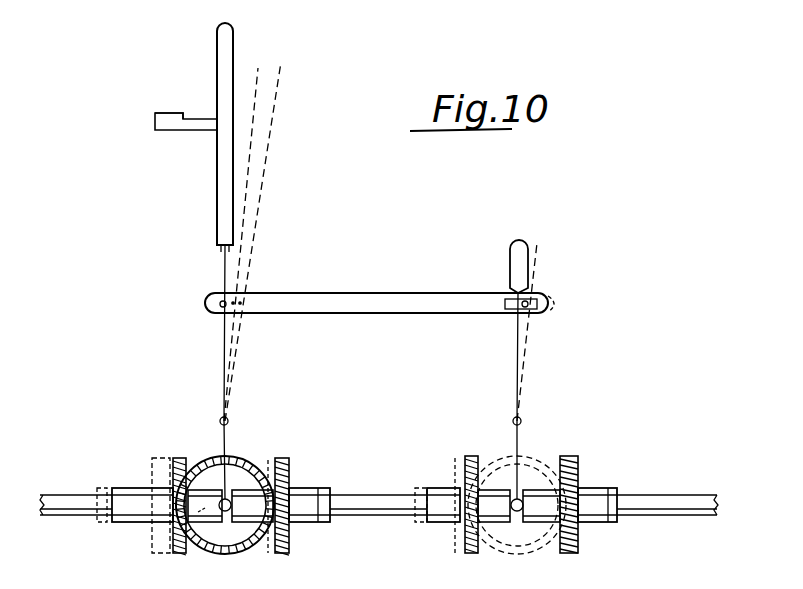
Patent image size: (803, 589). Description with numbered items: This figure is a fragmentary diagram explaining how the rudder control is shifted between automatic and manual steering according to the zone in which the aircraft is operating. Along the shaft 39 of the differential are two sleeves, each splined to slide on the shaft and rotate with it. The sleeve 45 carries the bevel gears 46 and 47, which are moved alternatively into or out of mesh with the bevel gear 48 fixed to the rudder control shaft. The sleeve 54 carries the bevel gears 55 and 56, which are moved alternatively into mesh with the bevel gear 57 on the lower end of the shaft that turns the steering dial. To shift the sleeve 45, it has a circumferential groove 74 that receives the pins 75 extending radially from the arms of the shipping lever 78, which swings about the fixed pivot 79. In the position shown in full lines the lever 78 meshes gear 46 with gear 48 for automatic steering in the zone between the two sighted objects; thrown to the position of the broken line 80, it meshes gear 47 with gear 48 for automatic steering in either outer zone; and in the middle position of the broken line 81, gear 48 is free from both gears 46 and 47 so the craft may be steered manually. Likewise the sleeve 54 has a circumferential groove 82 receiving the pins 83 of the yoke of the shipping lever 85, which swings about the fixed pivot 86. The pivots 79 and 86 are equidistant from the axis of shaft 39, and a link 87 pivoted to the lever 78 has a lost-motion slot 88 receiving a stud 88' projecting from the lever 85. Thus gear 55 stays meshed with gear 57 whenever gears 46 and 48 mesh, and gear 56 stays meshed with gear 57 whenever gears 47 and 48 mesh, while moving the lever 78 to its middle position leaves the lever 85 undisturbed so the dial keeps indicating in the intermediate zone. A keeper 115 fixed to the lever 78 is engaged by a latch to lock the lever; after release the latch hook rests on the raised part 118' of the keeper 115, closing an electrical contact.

The shaft 39 is at (62, 500).
The sleeve 45 is at (140, 522).
The bevel gear 46 is at (186, 465).
The bevel gear 47 is at (290, 470).
The bevel gear 48 is at (222, 552).
The sleeve 54 is at (452, 522).
The bevel gear 55 is at (465, 472).
The bevel gear 56 is at (580, 470).
The bevel gear 57 is at (545, 556).
The circumferential groove 74 is at (222, 522).
The pins 75 is at (230, 500).
The shipping lever 78 is at (217, 47).
The fixed pivot 79 is at (229, 421).
The broken line position 80 is at (261, 201).
The middle position 81 is at (252, 131).
The circumferential groove 82 is at (506, 528).
The pins 83 is at (522, 500).
The shipping lever 85 is at (530, 262).
The fixed pivot 86 is at (522, 421).
The link 87 is at (330, 300).
The lost-motion slot 88 is at (492, 318).
The stud 88' is at (579, 304).
The keeper 115 is at (170, 128).
The raised part 118' is at (146, 104).